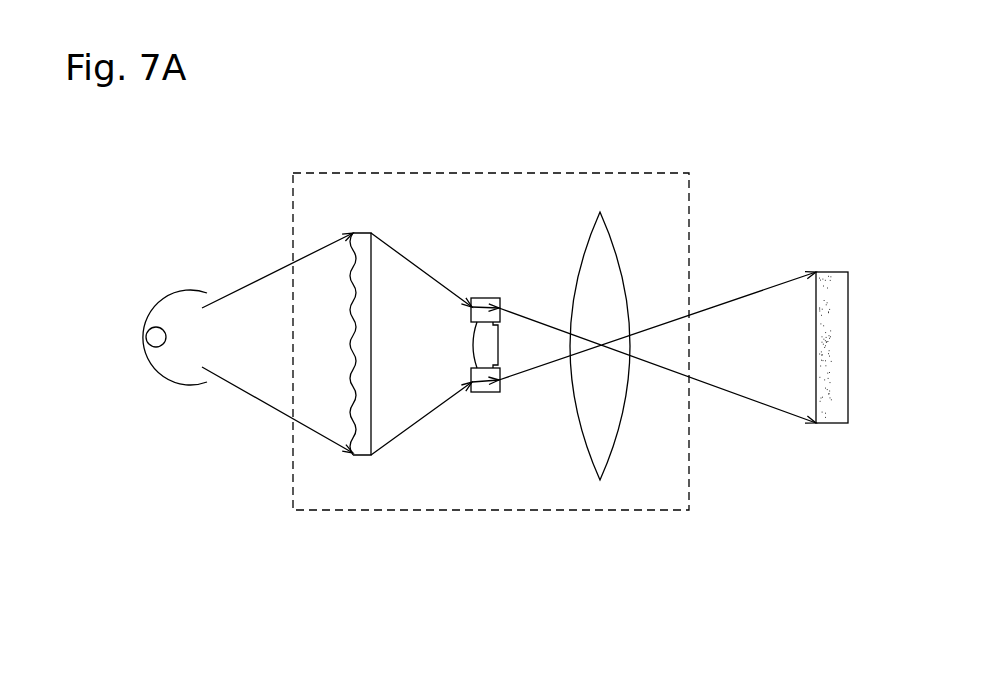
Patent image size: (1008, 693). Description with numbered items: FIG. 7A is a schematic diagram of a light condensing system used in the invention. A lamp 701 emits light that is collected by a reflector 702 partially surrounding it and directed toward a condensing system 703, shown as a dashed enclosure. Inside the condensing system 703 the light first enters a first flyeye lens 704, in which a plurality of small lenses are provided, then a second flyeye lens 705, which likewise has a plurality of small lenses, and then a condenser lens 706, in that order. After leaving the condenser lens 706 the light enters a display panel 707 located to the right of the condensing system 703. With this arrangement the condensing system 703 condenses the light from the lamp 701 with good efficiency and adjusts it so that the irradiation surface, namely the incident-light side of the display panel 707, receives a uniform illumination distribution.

The lamp 701 is at (148, 330).
The reflector 702 is at (172, 387).
The condensing system 703 is at (473, 173).
The first flyeye lens 704 is at (358, 455).
The second flyeye lens 705 is at (492, 392).
The condenser lens 706 is at (608, 452).
The display panel 707 is at (820, 423).